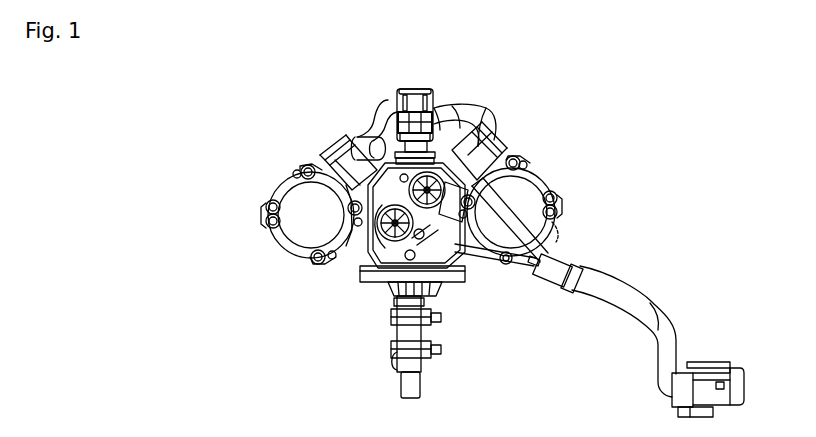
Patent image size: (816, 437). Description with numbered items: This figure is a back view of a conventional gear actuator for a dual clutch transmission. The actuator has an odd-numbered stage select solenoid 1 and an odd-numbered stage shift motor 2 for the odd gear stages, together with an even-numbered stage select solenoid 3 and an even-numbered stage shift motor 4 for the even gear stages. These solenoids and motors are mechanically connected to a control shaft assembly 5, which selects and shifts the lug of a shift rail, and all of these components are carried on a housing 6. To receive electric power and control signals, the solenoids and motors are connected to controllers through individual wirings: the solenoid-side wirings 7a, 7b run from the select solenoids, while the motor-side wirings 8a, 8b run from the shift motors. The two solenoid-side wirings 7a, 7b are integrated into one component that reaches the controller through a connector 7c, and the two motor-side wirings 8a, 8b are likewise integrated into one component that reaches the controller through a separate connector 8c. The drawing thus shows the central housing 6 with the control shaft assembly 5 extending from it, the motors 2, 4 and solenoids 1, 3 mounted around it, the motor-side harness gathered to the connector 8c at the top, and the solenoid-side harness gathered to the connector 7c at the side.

The odd-numbered stage select solenoid 1 is at (372, 258).
The odd-numbered stage shift motor 2 is at (533, 187).
The even-numbered stage select solenoid 3 is at (455, 270).
The even-numbered stage shift motor 4 is at (300, 228).
The control shaft assembly 5 is at (400, 386).
The housing 6 is at (377, 290).
The wiring 7a is at (485, 256).
The wiring 7b is at (548, 228).
The connector 7c is at (708, 358).
The wiring 8a is at (470, 110).
The wiring 8b is at (386, 110).
The connector 8c is at (414, 88).